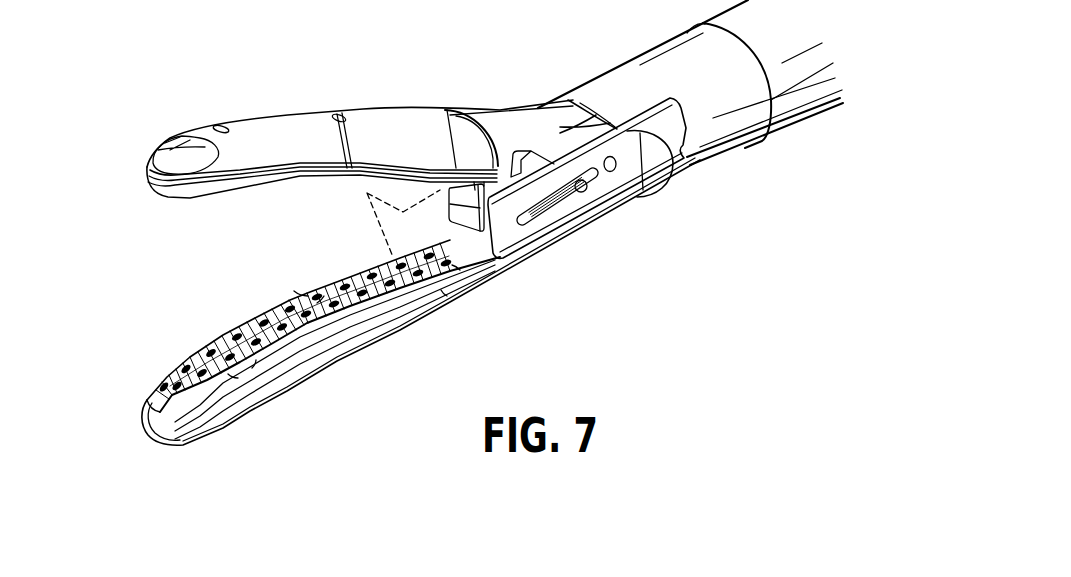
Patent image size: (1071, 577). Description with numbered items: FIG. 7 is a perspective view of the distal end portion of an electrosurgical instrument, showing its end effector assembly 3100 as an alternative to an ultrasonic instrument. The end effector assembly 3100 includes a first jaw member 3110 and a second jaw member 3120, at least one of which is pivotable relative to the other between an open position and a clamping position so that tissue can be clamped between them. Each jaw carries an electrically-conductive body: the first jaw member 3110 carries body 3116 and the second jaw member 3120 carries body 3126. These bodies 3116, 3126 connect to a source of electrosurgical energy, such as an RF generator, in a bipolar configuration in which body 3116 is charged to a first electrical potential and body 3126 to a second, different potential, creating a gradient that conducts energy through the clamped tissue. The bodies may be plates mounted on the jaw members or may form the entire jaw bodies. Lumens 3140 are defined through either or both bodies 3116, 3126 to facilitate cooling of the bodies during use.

The end effector assembly 3100 is at (145, 63).
The first jaw member 3110 is at (298, 108).
The electrically-conductive body 3116 is at (224, 192).
The second jaw member 3120 is at (337, 359).
The electrically-conductive body 3126 is at (203, 339).
The lumens 3140 is at (321, 302).